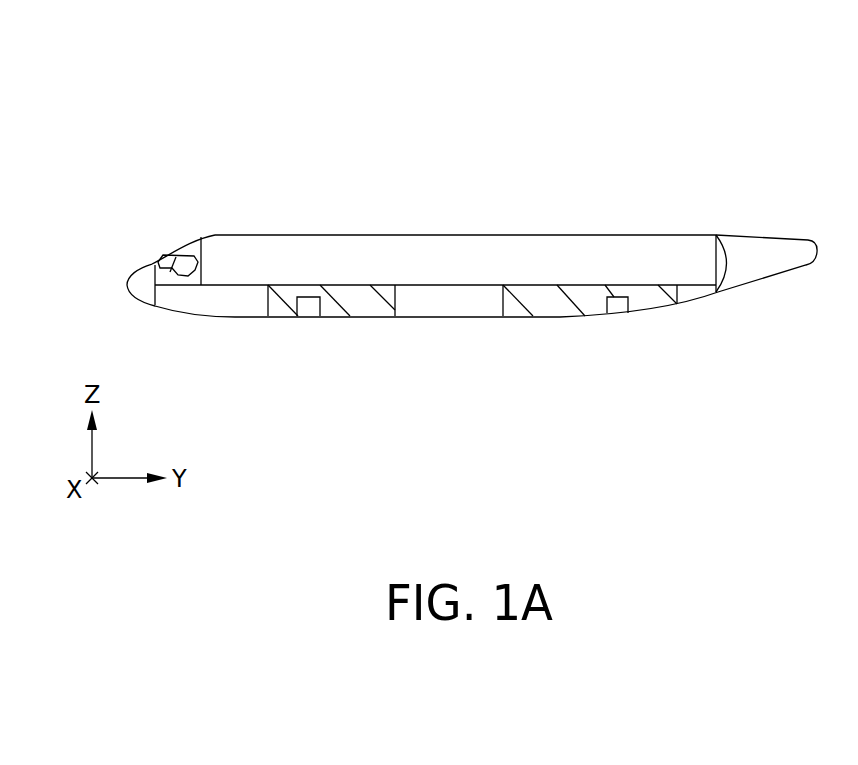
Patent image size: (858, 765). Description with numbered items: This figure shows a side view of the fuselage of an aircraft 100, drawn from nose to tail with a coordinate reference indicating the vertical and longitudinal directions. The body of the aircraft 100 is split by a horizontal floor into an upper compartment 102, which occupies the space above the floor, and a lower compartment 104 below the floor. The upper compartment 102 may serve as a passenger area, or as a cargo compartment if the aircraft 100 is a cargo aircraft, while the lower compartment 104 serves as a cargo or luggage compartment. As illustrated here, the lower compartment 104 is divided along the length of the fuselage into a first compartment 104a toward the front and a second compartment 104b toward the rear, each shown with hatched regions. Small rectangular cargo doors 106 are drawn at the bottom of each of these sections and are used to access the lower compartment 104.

The aircraft 100 is at (205, 190).
The upper compartment 102 is at (466, 273).
The lower compartment 104 is at (450, 316).
The first compartment 104a is at (355, 316).
The second compartment 104b is at (533, 316).
The cargo door 106 is at (310, 316).